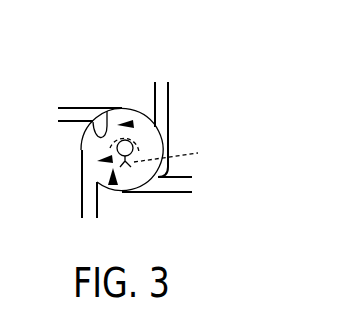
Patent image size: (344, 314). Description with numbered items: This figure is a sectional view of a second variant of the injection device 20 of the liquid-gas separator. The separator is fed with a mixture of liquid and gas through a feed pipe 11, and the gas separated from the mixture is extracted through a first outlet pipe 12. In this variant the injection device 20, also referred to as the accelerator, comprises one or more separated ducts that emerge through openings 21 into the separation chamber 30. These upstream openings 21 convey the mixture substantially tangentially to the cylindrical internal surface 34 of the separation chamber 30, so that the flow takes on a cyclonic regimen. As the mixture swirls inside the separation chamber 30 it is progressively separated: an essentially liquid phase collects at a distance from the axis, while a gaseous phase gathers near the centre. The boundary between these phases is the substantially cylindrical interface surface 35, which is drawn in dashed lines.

The feed pipe 11 is at (75, 107).
The first outlet pipe 12 is at (127, 158).
The injection device 20 is at (55, 156).
The openings 21 is at (112, 159).
The separation chamber 30 is at (113, 186).
The cylindrical internal surface 34 is at (107, 110).
The interface surface 35 is at (177, 155).